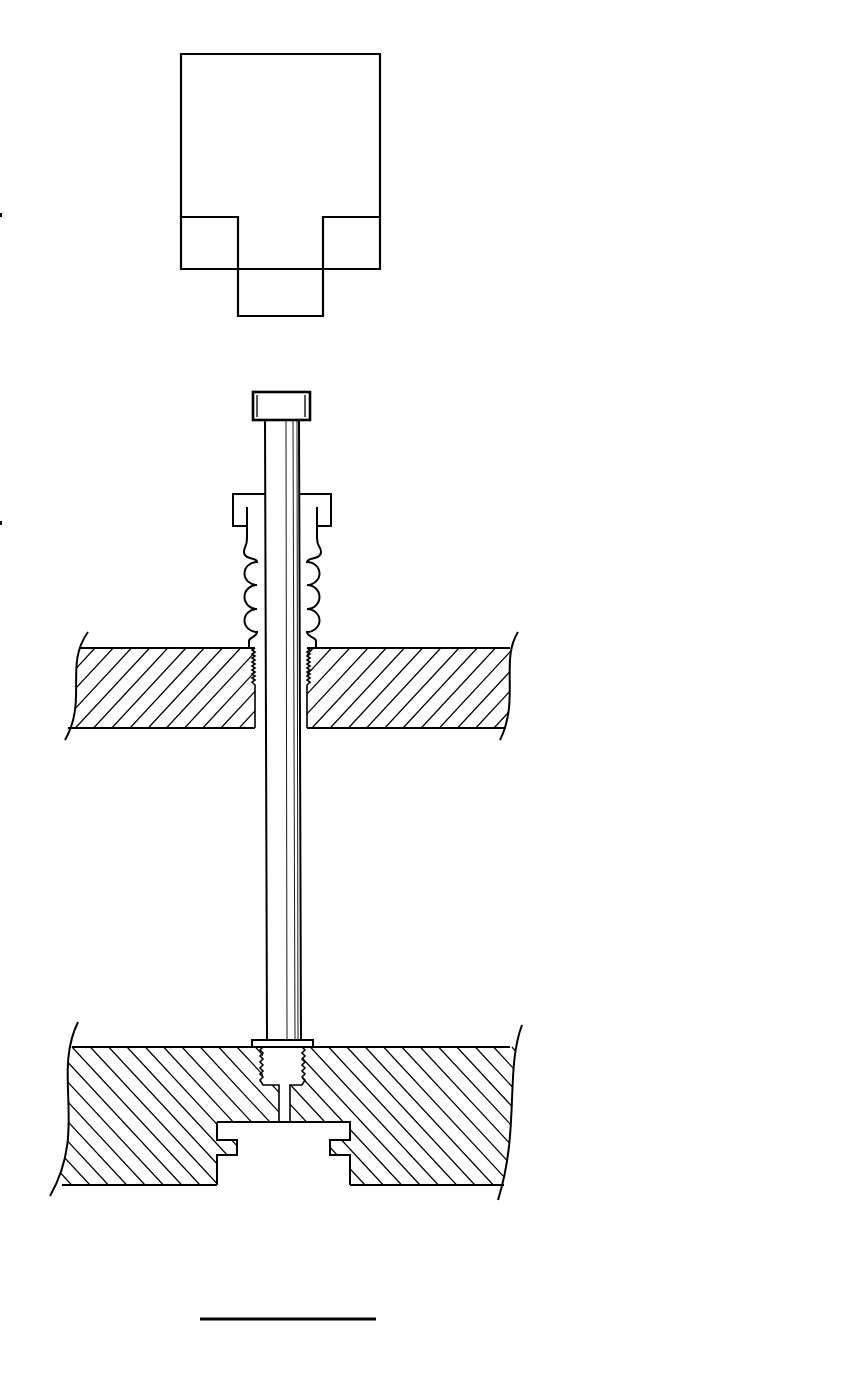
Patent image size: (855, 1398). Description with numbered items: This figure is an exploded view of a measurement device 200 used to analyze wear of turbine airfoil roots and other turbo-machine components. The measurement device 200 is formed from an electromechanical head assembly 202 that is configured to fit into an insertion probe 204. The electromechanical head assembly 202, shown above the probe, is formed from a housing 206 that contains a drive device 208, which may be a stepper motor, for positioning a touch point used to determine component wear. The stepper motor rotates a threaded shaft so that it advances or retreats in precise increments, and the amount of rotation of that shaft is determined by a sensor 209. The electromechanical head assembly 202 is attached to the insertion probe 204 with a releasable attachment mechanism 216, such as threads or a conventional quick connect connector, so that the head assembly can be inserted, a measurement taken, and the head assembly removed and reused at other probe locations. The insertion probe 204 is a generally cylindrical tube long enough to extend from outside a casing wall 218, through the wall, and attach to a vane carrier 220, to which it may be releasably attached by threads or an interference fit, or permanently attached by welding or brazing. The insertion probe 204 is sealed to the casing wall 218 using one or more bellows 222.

The measurement device 200 is at (437, 150).
The electromechanical head assembly 202 is at (170, 195).
The insertion probe 204 is at (240, 594).
The housing 206 is at (307, 65).
The drive device 208 is at (212, 242).
The sensor 209 is at (380, 250).
The releasable attachment mechanism 216 is at (296, 405).
The casing wall 218 is at (184, 706).
The vane carrier 220 is at (338, 1047).
The bellows 222 is at (320, 592).